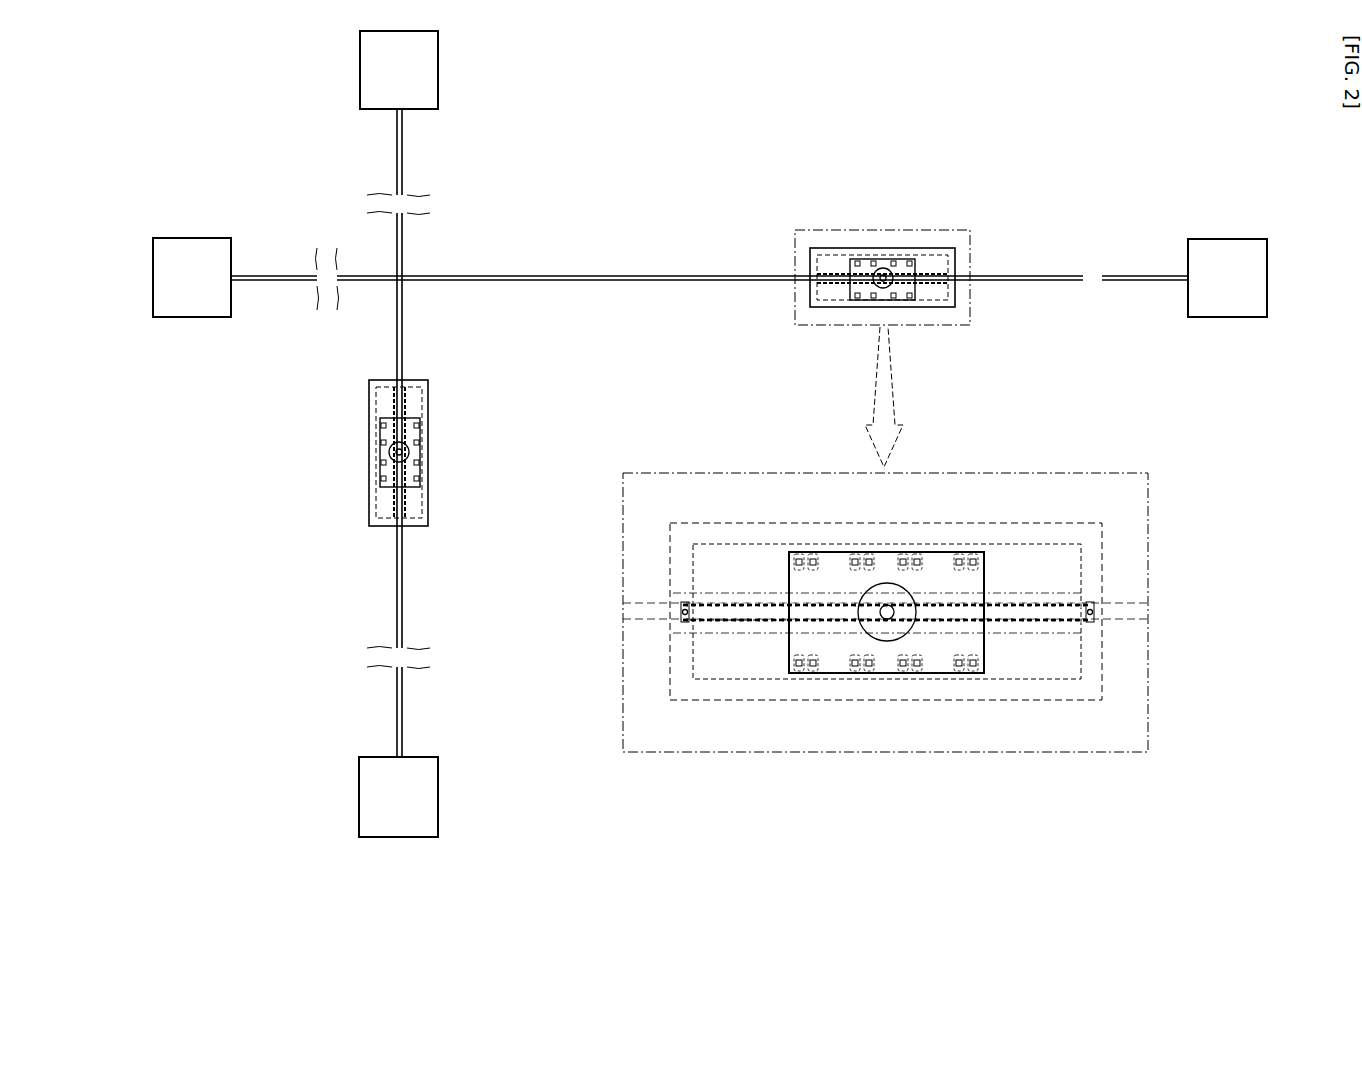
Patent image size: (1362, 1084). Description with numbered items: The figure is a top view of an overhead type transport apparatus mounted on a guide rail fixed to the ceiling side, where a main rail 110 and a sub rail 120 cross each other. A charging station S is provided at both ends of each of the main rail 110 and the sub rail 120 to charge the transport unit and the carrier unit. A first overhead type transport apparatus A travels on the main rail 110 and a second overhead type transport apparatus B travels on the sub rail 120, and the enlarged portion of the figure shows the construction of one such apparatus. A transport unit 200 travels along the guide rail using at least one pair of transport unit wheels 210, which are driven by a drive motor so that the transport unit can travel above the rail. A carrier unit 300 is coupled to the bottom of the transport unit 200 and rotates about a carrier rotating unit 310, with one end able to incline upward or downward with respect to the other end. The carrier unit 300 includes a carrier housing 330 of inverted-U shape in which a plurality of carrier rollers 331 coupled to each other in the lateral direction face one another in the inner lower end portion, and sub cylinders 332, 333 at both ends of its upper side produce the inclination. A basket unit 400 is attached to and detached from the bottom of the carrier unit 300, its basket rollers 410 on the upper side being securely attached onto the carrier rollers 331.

The charging station S is at (438, 70).
The main rail 110 is at (711, 270).
The sub rail 120 is at (403, 578).
The first overhead type transport apparatus A is at (883, 228).
The second overhead type transport apparatus B is at (455, 455).
The transport unit 200 is at (832, 552).
The transport unit wheels 210 is at (800, 560).
The carrier unit 300 is at (1093, 540).
The carrier rotating unit 310 is at (905, 600).
The carrier housing 330 is at (888, 615).
The carrier rollers 331 is at (1092, 620).
The sub cylinder 332 is at (683, 612).
The sub cylinder 333 is at (1092, 611).
The basket unit 400 is at (1060, 548).
The basket rollers 410 is at (700, 622).